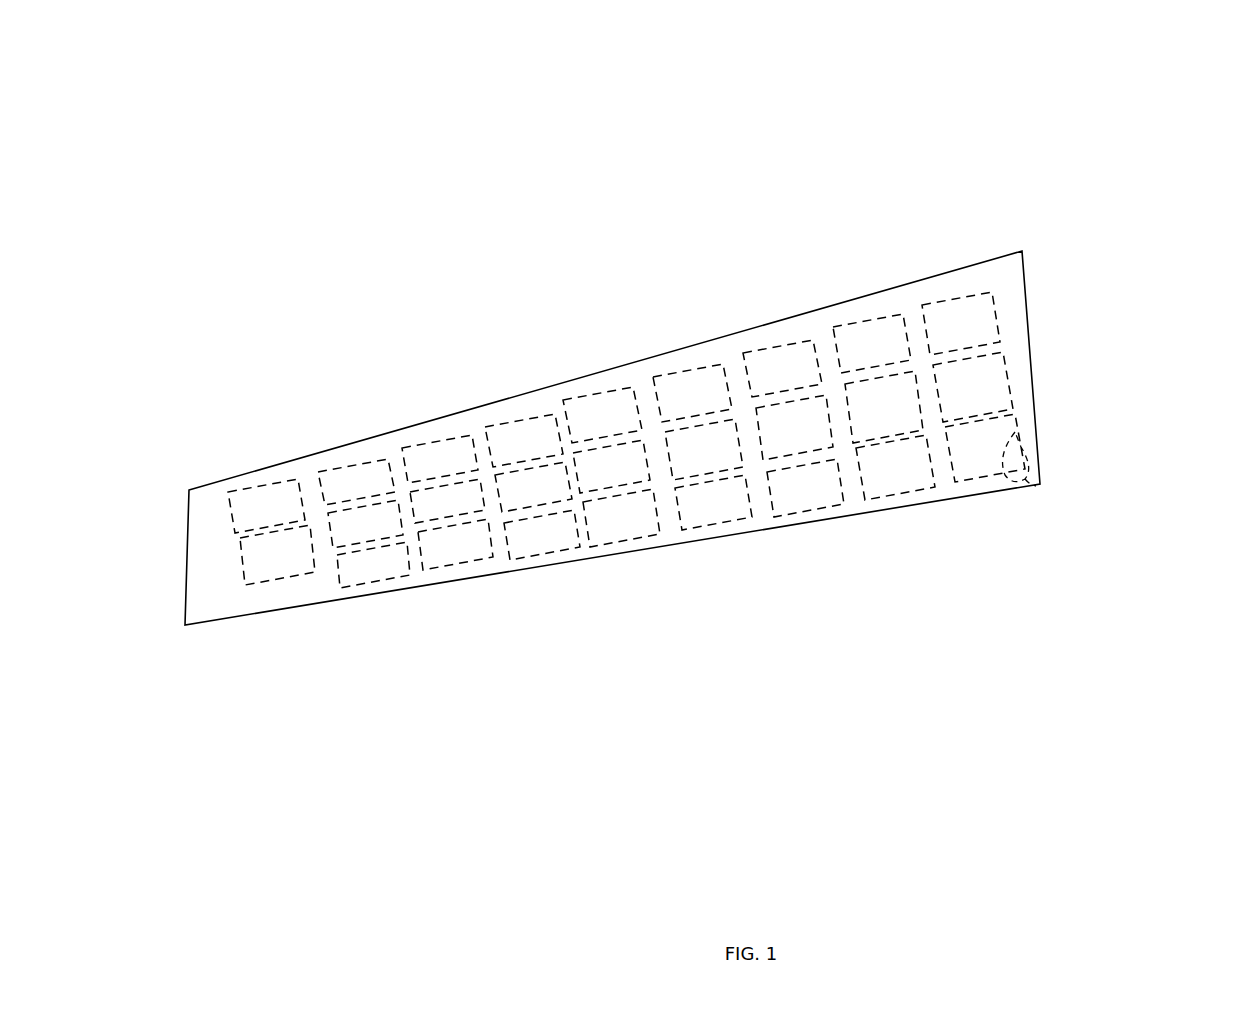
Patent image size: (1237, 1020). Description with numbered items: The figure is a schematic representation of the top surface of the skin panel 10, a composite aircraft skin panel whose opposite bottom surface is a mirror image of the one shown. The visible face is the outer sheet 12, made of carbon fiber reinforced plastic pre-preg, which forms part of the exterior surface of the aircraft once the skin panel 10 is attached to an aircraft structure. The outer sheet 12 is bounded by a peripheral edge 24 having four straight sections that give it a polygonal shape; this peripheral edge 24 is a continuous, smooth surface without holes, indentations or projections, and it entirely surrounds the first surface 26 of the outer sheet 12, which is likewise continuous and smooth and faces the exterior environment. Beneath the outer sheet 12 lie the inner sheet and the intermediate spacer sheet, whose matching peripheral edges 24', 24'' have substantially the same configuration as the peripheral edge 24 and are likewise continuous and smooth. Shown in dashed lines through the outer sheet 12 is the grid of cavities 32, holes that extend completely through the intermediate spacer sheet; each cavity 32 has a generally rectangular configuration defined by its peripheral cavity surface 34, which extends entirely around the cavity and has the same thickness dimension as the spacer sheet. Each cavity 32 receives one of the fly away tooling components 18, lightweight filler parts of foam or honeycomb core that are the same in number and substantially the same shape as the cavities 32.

The skin panel 10 is at (902, 190).
The outer sheet 12 is at (702, 340).
The fly away tooling components 18 is at (950, 320).
The peripheral edge 24 is at (360, 532).
The peripheral edge 24' is at (614, 481).
The peripheral edge 24'' is at (958, 413).
The first surface 26 is at (308, 475).
The cavities 32 is at (527, 453).
The peripheral cavity surface 34 is at (1036, 486).